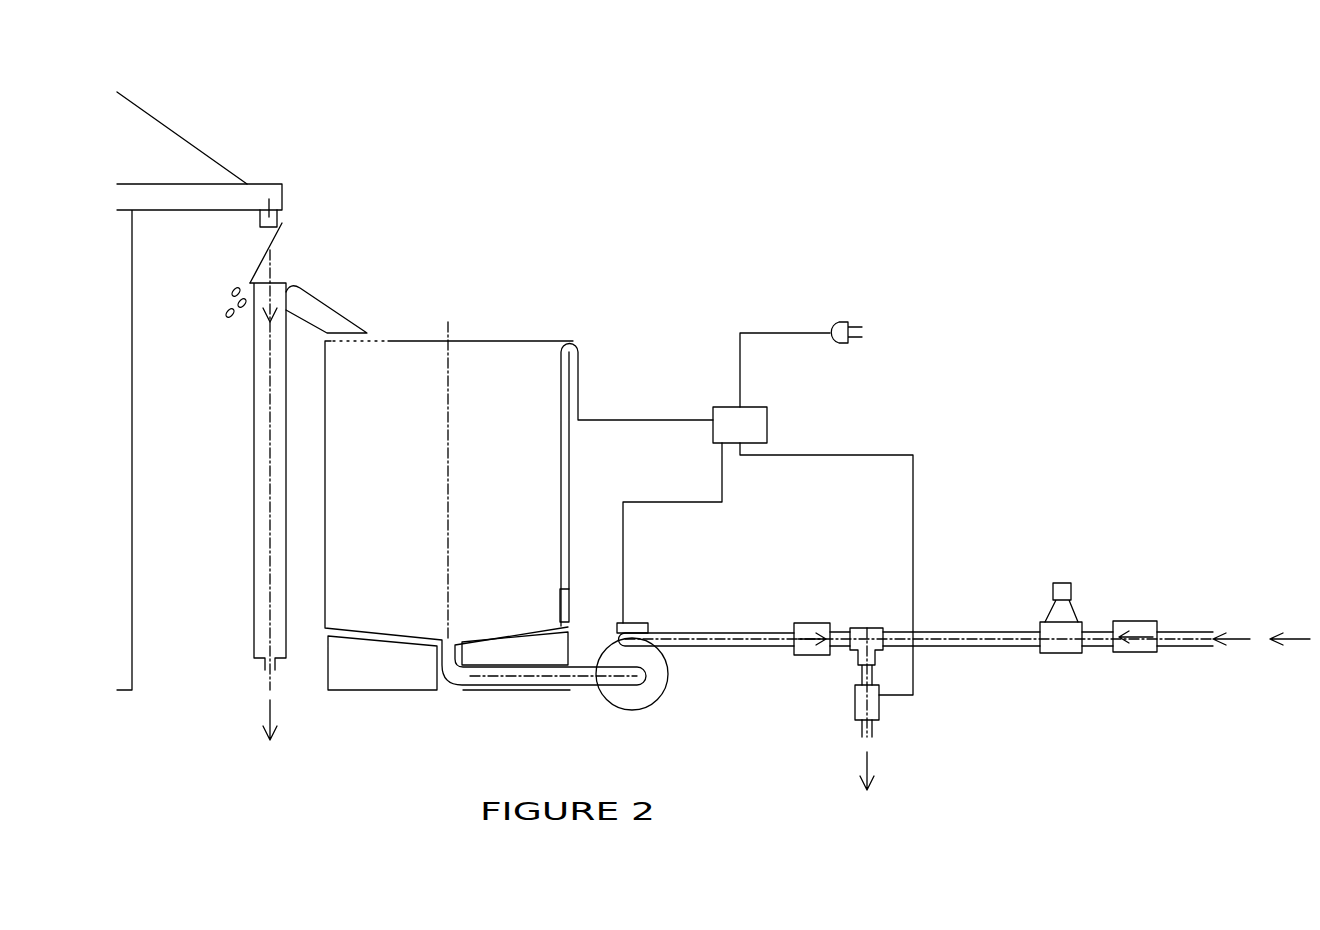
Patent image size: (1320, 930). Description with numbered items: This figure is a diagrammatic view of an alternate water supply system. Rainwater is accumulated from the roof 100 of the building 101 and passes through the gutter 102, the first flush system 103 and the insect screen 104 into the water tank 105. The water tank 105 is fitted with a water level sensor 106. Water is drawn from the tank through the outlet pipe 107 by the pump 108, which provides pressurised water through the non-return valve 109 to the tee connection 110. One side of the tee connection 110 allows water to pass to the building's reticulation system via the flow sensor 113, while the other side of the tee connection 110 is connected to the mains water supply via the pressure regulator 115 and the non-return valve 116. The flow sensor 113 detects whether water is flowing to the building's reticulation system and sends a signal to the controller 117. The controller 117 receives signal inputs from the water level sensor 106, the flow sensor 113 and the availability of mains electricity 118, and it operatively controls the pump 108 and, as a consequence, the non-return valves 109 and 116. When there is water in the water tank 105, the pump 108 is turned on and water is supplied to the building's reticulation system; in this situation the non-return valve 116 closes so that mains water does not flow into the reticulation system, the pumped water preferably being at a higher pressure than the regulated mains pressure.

The roof 100 is at (168, 122).
The building 101 is at (165, 88).
The gutter 102 is at (276, 186).
The first flush system 103 is at (257, 498).
The insect screen 104 is at (380, 336).
The water tank 105 is at (572, 490).
The water level sensor 106 is at (569, 598).
The outlet pipe 107 is at (513, 682).
The pump 108 is at (655, 703).
The non-return valve 109 is at (806, 622).
The tee connection 110 is at (858, 628).
The flow sensor 113 is at (882, 714).
The pressure regulator 115 is at (1073, 600).
The non-return valve 116 is at (1140, 620).
The controller 117 is at (726, 408).
The mains electricity 118 is at (845, 320).